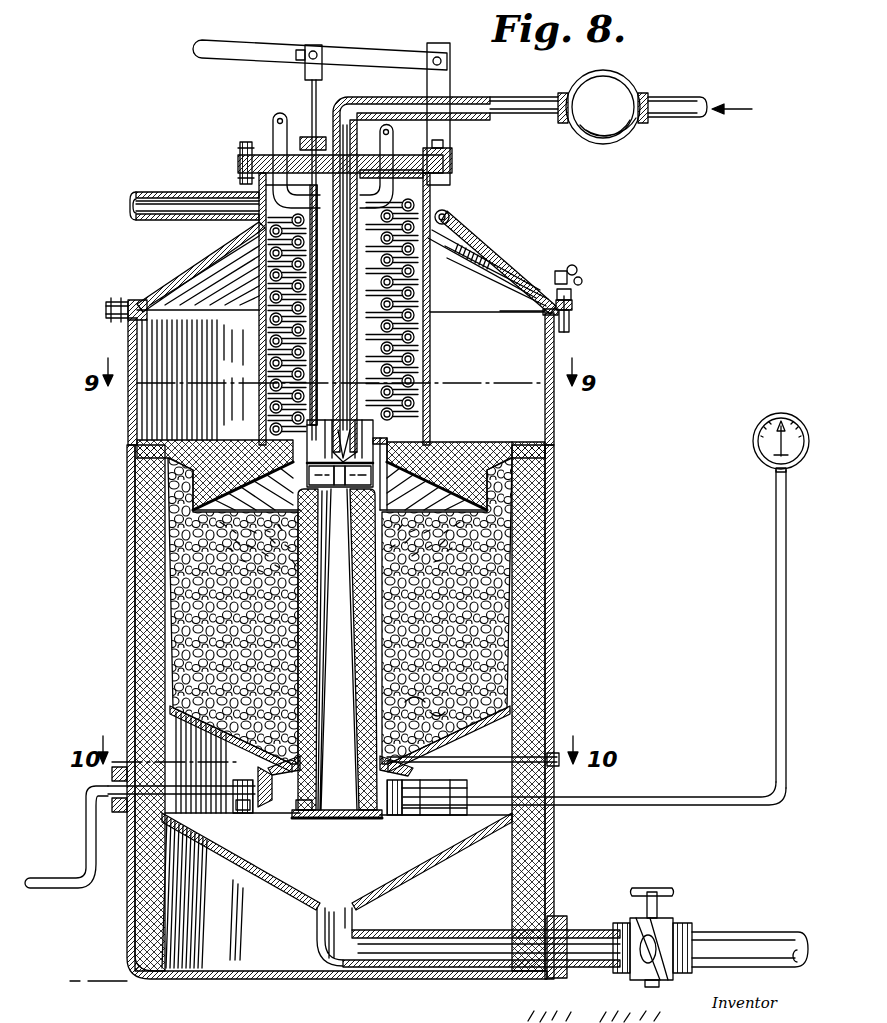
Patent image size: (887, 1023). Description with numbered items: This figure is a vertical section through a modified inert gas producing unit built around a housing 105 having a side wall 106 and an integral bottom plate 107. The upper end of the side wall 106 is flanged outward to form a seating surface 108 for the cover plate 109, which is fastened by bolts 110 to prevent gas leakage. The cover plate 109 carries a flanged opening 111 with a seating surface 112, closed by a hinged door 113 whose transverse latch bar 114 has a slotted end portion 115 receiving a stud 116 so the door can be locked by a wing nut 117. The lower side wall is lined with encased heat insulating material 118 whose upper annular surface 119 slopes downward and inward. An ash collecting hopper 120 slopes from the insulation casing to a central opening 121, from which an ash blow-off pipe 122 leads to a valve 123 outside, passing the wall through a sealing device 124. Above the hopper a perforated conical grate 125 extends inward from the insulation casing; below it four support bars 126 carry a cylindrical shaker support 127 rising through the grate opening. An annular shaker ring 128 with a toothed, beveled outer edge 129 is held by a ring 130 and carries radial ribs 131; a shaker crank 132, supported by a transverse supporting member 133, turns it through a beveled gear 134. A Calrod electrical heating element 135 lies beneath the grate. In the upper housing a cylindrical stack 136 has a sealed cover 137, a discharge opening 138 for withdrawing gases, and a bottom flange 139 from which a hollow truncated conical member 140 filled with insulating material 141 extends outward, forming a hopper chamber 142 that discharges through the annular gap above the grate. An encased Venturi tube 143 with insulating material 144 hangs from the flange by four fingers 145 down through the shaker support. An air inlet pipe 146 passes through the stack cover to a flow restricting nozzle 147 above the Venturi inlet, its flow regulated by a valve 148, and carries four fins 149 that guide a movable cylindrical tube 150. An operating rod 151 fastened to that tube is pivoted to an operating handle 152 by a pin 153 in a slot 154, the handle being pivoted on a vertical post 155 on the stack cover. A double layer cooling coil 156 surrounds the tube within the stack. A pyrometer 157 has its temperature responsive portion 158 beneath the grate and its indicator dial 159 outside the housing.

The housing 105 is at (558, 426).
The side wall 106 is at (552, 596).
The bottom plate 107 is at (233, 981).
The seating surface 108 is at (574, 318).
The cover plate 109 is at (208, 267).
The bolts 110 is at (572, 297).
The flanged opening 111 is at (530, 291).
The seating surface 112 is at (500, 278).
The door 113 is at (513, 262).
The transverse latch bar 114 is at (544, 272).
The slotted end portion 115 is at (583, 291).
The stud 116 is at (533, 313).
The wing nut 117 is at (578, 278).
The heat insulating material 118 is at (552, 671).
The upper annular surface 119 is at (552, 462).
The ash collecting hopper 120 is at (416, 878).
The opening 121 is at (345, 905).
The ash blow-off pipe 122 is at (440, 930).
The valve 123 is at (670, 925).
The sealing device 124 is at (558, 916).
The perforated conical grate 125 is at (446, 700).
The support bars 126 is at (464, 790).
The cylindrical shaker support 127 is at (362, 819).
The annular shaker ring 128 is at (404, 797).
The toothed, beveled outer edge 129 is at (410, 777).
The ring 130 is at (320, 815).
The ribs 131 is at (424, 698).
The shaker crank 132 is at (106, 779).
The transverse supporting member 133 is at (256, 815).
The beveled gear 134 is at (272, 808).
The electrical heating element 135 is at (456, 762).
The cylindrical stack 136 is at (431, 357).
The sealed cover 137 is at (453, 168).
The discharge opening 138 is at (258, 190).
The flange 139 is at (425, 442).
The hollow truncated conical member 140 is at (462, 456).
The heat insulating material 141 is at (250, 442).
The hopper chamber 142 is at (508, 368).
The Venturi tube 143 is at (378, 542).
The heat insulating material 144 is at (302, 546).
The fingers 145 is at (375, 494).
The air inlet pipe 146 is at (360, 97).
The flow restricting nozzle 147 is at (376, 472).
The valve 148 is at (620, 82).
The fins 149 is at (280, 368).
The movable cylindrical tube 150 is at (398, 414).
The operating rod 151 is at (310, 96).
The operating handle 152 is at (370, 48).
The pin 153 is at (318, 45).
The slot 154 is at (300, 50).
The vertical post 155 is at (452, 76).
The double layer cooling coil 156 is at (400, 346).
The pyrometer 157 is at (774, 626).
The temperature responsive portion 158 is at (440, 807).
The indicator dial 159 is at (757, 462).